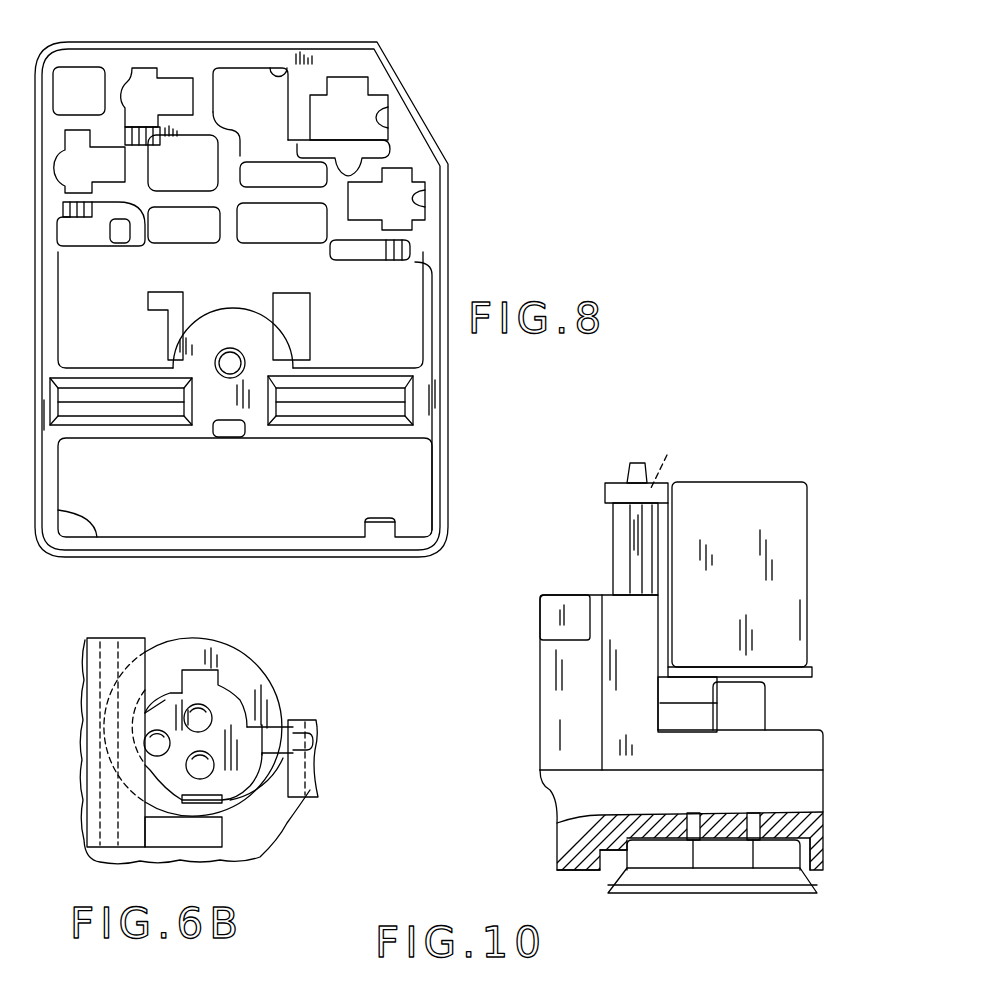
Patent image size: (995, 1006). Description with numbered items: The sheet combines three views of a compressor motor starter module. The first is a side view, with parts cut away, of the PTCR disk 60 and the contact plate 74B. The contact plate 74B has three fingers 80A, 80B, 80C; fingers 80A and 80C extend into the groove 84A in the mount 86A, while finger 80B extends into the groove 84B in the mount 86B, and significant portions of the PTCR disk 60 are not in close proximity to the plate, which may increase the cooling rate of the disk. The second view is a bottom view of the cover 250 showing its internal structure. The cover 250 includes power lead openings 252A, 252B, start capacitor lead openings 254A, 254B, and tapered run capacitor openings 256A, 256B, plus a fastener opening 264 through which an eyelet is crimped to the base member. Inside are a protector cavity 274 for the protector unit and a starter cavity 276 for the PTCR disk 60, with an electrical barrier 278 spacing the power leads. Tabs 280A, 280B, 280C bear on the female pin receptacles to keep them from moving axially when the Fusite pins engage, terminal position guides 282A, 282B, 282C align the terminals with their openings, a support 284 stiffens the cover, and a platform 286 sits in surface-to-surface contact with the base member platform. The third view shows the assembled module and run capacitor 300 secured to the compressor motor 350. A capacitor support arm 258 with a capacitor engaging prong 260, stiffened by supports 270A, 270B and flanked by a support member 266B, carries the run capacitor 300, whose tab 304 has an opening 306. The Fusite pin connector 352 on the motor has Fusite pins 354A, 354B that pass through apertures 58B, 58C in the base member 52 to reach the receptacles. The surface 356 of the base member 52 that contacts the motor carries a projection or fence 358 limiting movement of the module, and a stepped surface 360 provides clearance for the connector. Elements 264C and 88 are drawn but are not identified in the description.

In FIG. 8, the cover 250 is at (452, 177).
In FIG. 10, the cover 250 is at (533, 692).
In FIG. 8, the power lead opening 252A is at (413, 210).
In FIG. 8, the power lead opening 252B is at (377, 113).
In FIG. 8, the start capacitor lead opening 254A is at (78, 138).
In FIG. 8, the start capacitor lead opening 254B is at (133, 80).
In FIG. 8, the tapered run capacitor opening 256A is at (88, 403).
In FIG. 8, the tapered run capacitor opening 256B is at (360, 402).
In FIG. 10, the capacitor support arm 258 is at (613, 512).
In FIG. 10, the capacitor engaging prong 260 is at (647, 462).
In FIG. 8, the fastener opening 264 is at (231, 350).
In FIG. 10, the pin 264C is at (690, 693).
In FIG. 10, the support member 266B is at (755, 710).
In FIG. 10, the support 270A is at (632, 538).
In FIG. 10, the support 270B is at (595, 595).
In FIG. 8, the protector cavity 274 is at (97, 537).
In FIG. 8, the starter cavity 276 is at (280, 67).
In FIG. 8, the electrical barrier 278 is at (385, 148).
In FIG. 8, the tab 280A is at (172, 318).
In FIG. 8, the tab 280B is at (297, 321).
In FIG. 8, the tab 280C is at (232, 430).
In FIG. 8, the terminal position guide 282A is at (408, 250).
In FIG. 8, the terminal position guide 282B is at (70, 217).
In FIG. 8, the terminal position guide 282C is at (143, 132).
In FIG. 8, the support 284 is at (227, 140).
In FIG. 8, the platform 286 is at (208, 327).
In FIG. 10, the run capacitor 300 is at (753, 500).
In FIG. 10, the tab 304 is at (605, 497).
In FIG. 10, the opening 306 is at (682, 459).
In FIG. 10, the compressor motor 350 is at (742, 893).
In FIG. 10, the Fusite pin connector 352 is at (648, 858).
In FIG. 10, the Fusite pin 354A is at (697, 845).
In FIG. 10, the Fusite pin 354B is at (755, 845).
In FIG. 10, the surface 356 is at (552, 882).
In FIG. 10, the projection or fence 358 is at (815, 895).
In FIG. 10, the stepped surface 360 is at (613, 860).
In FIG. 10, the base member 52 is at (540, 804).
In FIG. 10, the aperture 58B is at (758, 818).
In FIG. 10, the aperture 58C is at (682, 817).
In FIG. 6B, the PTCR disk 60 is at (260, 692).
In FIG. 6B, the contact plate 74B is at (203, 743).
In FIG. 6B, the finger 80A is at (153, 668).
In FIG. 6B, the finger 80B is at (262, 766).
In FIG. 6B, the finger 80C is at (150, 822).
In FIG. 6B, the groove 84A is at (112, 662).
In FIG. 6B, the groove 84B is at (308, 783).
In FIG. 6B, the mount 86A is at (110, 663).
In FIG. 6B, the mount 86B is at (300, 720).
In FIG. 6B, the bracket 88 is at (240, 803).